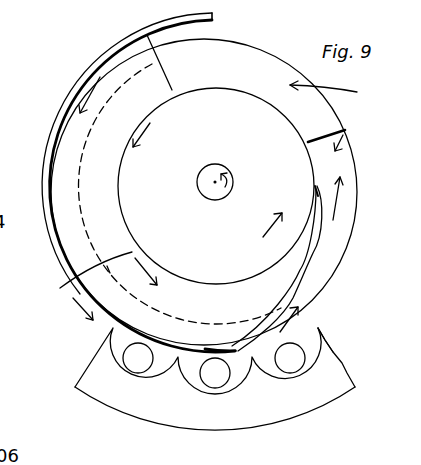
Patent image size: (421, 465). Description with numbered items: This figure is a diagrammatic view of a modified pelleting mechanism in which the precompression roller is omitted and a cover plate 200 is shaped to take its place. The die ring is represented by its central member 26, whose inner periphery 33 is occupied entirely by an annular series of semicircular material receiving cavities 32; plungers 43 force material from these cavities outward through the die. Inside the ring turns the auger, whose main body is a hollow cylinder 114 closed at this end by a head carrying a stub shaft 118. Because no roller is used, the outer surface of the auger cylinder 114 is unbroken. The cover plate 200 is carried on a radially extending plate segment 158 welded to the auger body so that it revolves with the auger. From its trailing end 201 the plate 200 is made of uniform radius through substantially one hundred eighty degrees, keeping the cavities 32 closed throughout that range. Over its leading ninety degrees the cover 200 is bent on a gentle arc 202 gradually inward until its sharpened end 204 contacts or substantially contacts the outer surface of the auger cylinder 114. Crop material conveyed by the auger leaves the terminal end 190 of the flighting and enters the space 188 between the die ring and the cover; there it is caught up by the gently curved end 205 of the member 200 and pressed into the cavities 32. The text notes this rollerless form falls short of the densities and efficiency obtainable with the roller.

The space 188 is at (345, 130).
The hollow cylinder 114 is at (292, 118).
The stub shaft 118 is at (233, 176).
The terminal end 190 is at (325, 134).
The cover plate 200 is at (58, 240).
The trailing end 201 is at (222, 12).
The gentle arc 202 is at (227, 349).
The plate segment 158 is at (78, 276).
The gently curved end 205 is at (307, 277).
The sharpened end 204 is at (315, 193).
The central member 26 is at (122, 397).
The plunger 43 is at (212, 378).
The material receiving cavity 32 is at (277, 371).
The inner periphery 33 is at (316, 346).